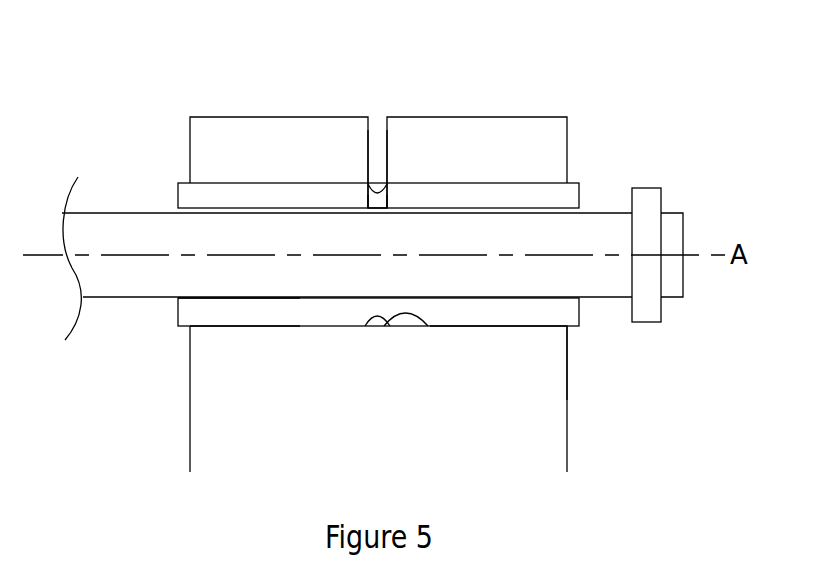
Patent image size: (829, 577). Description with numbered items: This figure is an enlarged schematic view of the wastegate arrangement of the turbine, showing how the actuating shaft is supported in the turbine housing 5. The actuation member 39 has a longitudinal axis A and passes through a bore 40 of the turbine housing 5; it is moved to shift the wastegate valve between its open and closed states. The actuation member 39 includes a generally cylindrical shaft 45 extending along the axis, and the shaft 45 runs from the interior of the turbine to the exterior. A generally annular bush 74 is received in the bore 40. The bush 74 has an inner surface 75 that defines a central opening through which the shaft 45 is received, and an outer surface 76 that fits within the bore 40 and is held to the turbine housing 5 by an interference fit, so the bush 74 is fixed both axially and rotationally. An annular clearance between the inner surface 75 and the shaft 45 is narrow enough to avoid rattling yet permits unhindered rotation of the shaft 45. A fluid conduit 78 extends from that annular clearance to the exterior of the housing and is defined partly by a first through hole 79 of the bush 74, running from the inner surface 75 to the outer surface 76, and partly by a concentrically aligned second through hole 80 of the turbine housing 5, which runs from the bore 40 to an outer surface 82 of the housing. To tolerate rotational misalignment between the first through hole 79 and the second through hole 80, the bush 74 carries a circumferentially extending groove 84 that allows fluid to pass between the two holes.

The turbine housing 5 is at (547, 378).
The actuation member 39 is at (135, 183).
The bore 40 is at (482, 329).
The shaft 45 is at (601, 228).
The bush 74 is at (310, 327).
The inner surface 75 is at (230, 298).
The outer surface 76 is at (235, 332).
The fluid conduit 78 is at (397, 143).
The first through hole 79 is at (383, 195).
The second through hole 80 is at (368, 170).
The outer surface 82 is at (225, 117).
The groove 84 is at (382, 191).